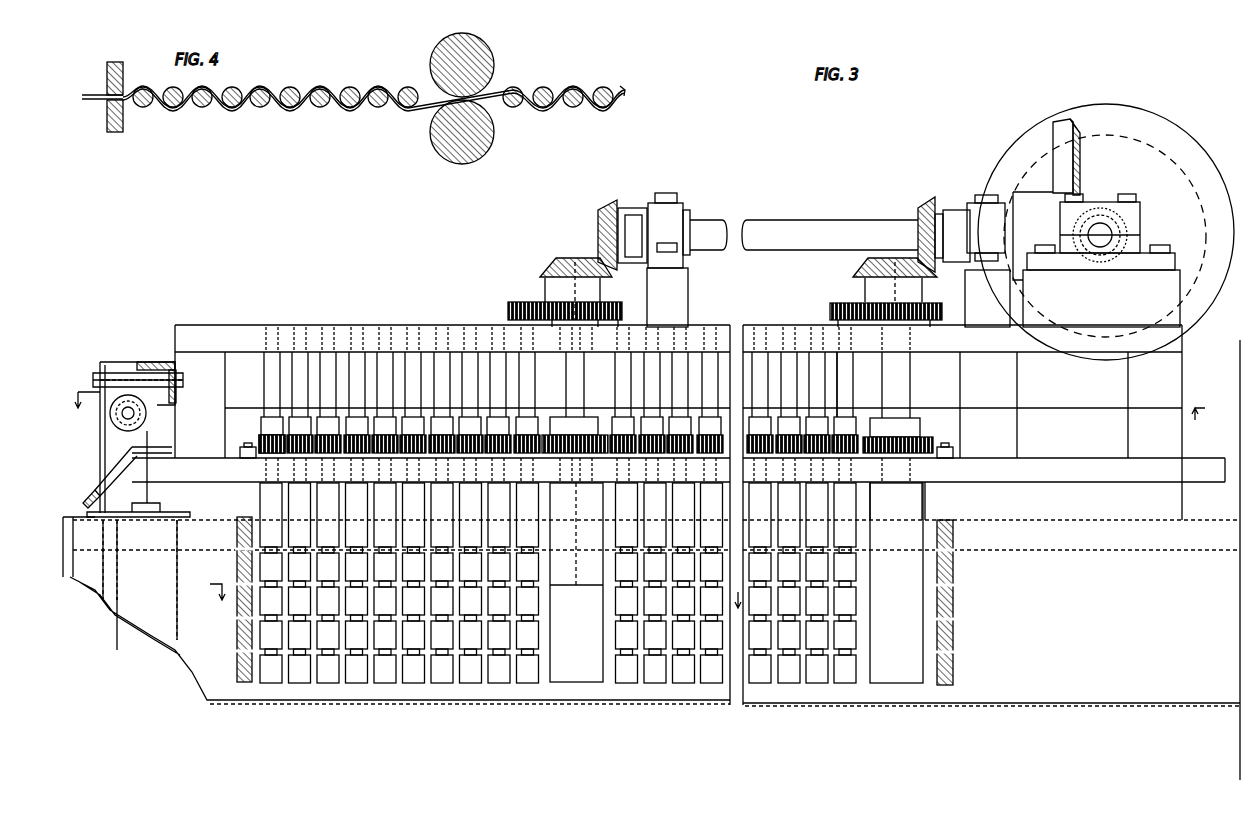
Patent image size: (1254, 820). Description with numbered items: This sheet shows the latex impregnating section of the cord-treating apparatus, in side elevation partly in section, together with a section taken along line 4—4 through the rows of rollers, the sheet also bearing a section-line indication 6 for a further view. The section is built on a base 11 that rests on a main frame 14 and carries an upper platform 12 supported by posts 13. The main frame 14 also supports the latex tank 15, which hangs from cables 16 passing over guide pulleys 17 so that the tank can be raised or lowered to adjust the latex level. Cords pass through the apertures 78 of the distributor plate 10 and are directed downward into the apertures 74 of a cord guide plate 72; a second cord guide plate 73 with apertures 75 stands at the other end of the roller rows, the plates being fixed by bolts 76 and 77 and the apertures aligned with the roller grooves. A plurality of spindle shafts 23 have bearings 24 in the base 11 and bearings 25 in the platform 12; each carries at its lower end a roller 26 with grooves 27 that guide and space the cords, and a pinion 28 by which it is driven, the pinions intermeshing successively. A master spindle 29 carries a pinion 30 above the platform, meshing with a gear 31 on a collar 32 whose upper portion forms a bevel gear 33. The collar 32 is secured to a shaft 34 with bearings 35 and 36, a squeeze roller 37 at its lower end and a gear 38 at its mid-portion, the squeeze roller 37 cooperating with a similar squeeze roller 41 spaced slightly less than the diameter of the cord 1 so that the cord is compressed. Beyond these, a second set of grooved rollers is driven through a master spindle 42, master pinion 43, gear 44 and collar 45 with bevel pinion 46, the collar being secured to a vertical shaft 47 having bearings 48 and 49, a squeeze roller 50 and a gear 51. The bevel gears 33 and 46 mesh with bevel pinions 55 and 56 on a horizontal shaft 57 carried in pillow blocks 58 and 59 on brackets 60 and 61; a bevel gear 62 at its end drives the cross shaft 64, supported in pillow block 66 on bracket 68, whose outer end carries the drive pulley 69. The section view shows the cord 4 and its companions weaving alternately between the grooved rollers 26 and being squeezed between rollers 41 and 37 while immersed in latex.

In FIG. 4, the cord 1 is at (418, 100).
In FIG. 3, the cord 4 is at (477, 604).
In FIG. 3, the direction arrow 6 is at (638, 416).
In FIG. 3, the distributor plate 10 is at (85, 500).
In FIG. 3, the base 11 is at (1010, 478).
In FIG. 3, the upper platform 12 is at (190, 325).
In FIG. 3, the posts 13 is at (215, 363).
In FIG. 3, the main frame 14 is at (112, 362).
In FIG. 3, the latex tank 15 is at (1032, 705).
In FIG. 3, the cables 16 is at (147, 490).
In FIG. 3, the guide pulleys 17 is at (146, 416).
In FIG. 3, the spindle shafts 23 is at (300, 388).
In FIG. 3, the bearings 24 is at (286, 484).
In FIG. 3, the bearings 25 is at (322, 326).
In FIG. 4, the roller 26 is at (261, 108).
In FIG. 3, the roller 26 is at (441, 676).
In FIG. 3, the grooves 27 is at (333, 675).
In FIG. 3, the pinion 28 is at (260, 440).
In FIG. 3, the master spindle 29 is at (522, 380).
In FIG. 3, the pinion 30 is at (508, 304).
In FIG. 3, the gear 31 is at (616, 304).
In FIG. 3, the collar 32 is at (545, 283).
In FIG. 3, the bevel gear 33 is at (548, 258).
In FIG. 3, the shaft 34 is at (570, 397).
In FIG. 3, the bearing 35 is at (592, 484).
In FIG. 3, the bearing 36 is at (598, 352).
In FIG. 4, the squeeze roller 37 is at (494, 128).
In FIG. 3, the squeeze roller 37 is at (565, 675).
In FIG. 3, the gear 38 is at (600, 420).
In FIG. 4, the squeeze roller 41 is at (485, 45).
In FIG. 3, the master spindle 42 is at (848, 376).
In FIG. 3, the master pinion 43 is at (830, 306).
In FIG. 3, the gear 44 is at (930, 304).
In FIG. 3, the collar 45 is at (865, 292).
In FIG. 3, the bevel pinion 46 is at (858, 262).
In FIG. 3, the vertical shaft 47 is at (910, 395).
In FIG. 3, the bearing 48 is at (912, 484).
In FIG. 3, the bearing 49 is at (930, 352).
In FIG. 3, the squeeze roller 50 is at (890, 690).
In FIG. 3, the gear 51 is at (930, 437).
In FIG. 3, the bevel pinion 55 is at (604, 205).
In FIG. 3, the bevel pinion 56 is at (924, 205).
In FIG. 3, the horizontal shaft 57 is at (782, 222).
In FIG. 3, the pillow block 58 is at (682, 218).
In FIG. 3, the pillow block 59 is at (978, 203).
In FIG. 3, the bracket 60 is at (688, 296).
In FIG. 3, the bracket 61 is at (1000, 340).
In FIG. 3, the bevel gear 62 is at (1053, 128).
In FIG. 3, the cross shaft 64 is at (1100, 228).
In FIG. 3, the pillow block 66 is at (1140, 222).
In FIG. 3, the bracket 68 is at (1175, 292).
In FIG. 3, the drive pulley 69 is at (1092, 104).
In FIG. 3, the cord guide plate 72 is at (237, 561).
In FIG. 3, the cord guide plate 73 is at (955, 670).
In FIG. 4, the apertures 74 is at (108, 96).
In FIG. 3, the apertures 74 is at (238, 648).
In FIG. 3, the apertures 75 is at (955, 650).
In FIG. 4, the bolt 76 is at (110, 62).
In FIG. 3, the bolt 76 is at (240, 450).
In FIG. 3, the bolt 77 is at (953, 450).
In FIG. 3, the apertures 78 is at (112, 470).